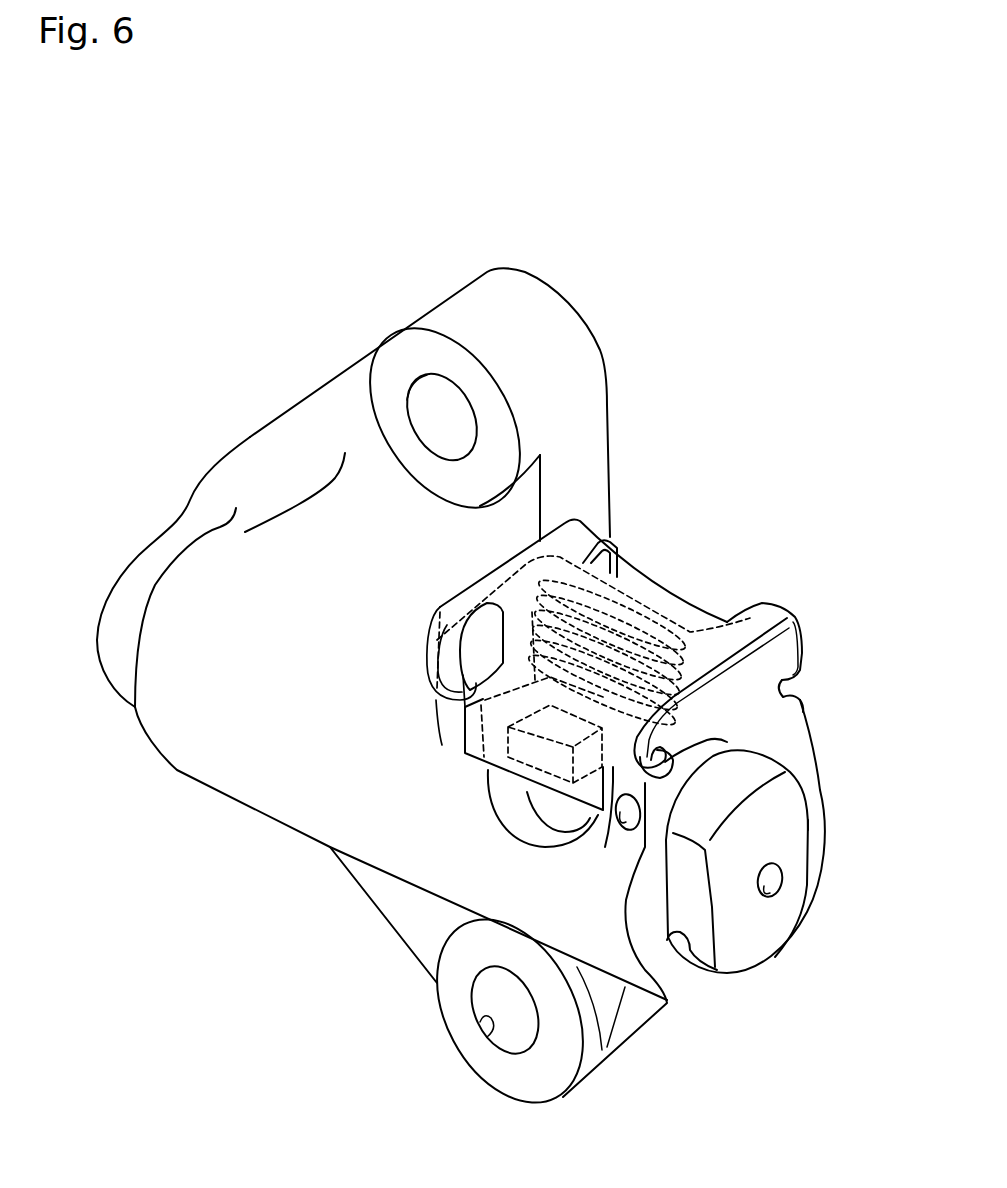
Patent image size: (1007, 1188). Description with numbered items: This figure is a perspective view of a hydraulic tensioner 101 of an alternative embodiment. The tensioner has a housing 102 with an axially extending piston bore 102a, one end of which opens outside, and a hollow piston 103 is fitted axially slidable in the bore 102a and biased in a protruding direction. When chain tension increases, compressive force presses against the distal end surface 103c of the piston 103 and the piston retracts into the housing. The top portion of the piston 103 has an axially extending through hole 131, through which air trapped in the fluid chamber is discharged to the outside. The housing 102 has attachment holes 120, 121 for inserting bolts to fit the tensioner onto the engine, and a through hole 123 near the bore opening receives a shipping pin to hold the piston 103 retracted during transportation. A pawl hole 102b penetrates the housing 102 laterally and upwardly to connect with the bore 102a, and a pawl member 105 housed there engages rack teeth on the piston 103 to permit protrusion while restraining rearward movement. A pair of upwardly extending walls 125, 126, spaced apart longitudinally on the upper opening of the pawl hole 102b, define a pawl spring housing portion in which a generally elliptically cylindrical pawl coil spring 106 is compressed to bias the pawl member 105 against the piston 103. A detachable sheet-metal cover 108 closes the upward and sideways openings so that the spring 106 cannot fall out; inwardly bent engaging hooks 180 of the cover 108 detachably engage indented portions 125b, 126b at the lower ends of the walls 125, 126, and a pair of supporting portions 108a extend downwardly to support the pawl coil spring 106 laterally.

The hydraulic tensioner 101 is at (362, 250).
The housing 102 is at (173, 770).
The piston bore 102a is at (690, 950).
The pawl hole 102b is at (527, 830).
The hollow piston 103 is at (777, 893).
The distal end surface 103c is at (797, 823).
The pawl member 105 is at (487, 780).
The pawl coil spring 106 is at (633, 597).
The cover 108 is at (699, 601).
The supporting portions 108a is at (515, 643).
The attachment hole 120 is at (410, 396).
The attachment hole 121 is at (490, 1025).
The through hole 123 is at (623, 813).
The wall 125 is at (781, 654).
The indented portion 125b is at (800, 703).
The wall 126 is at (477, 577).
The indented portion 126b is at (420, 682).
The through hole 131 is at (762, 893).
The engaging hooks 180 is at (793, 688).